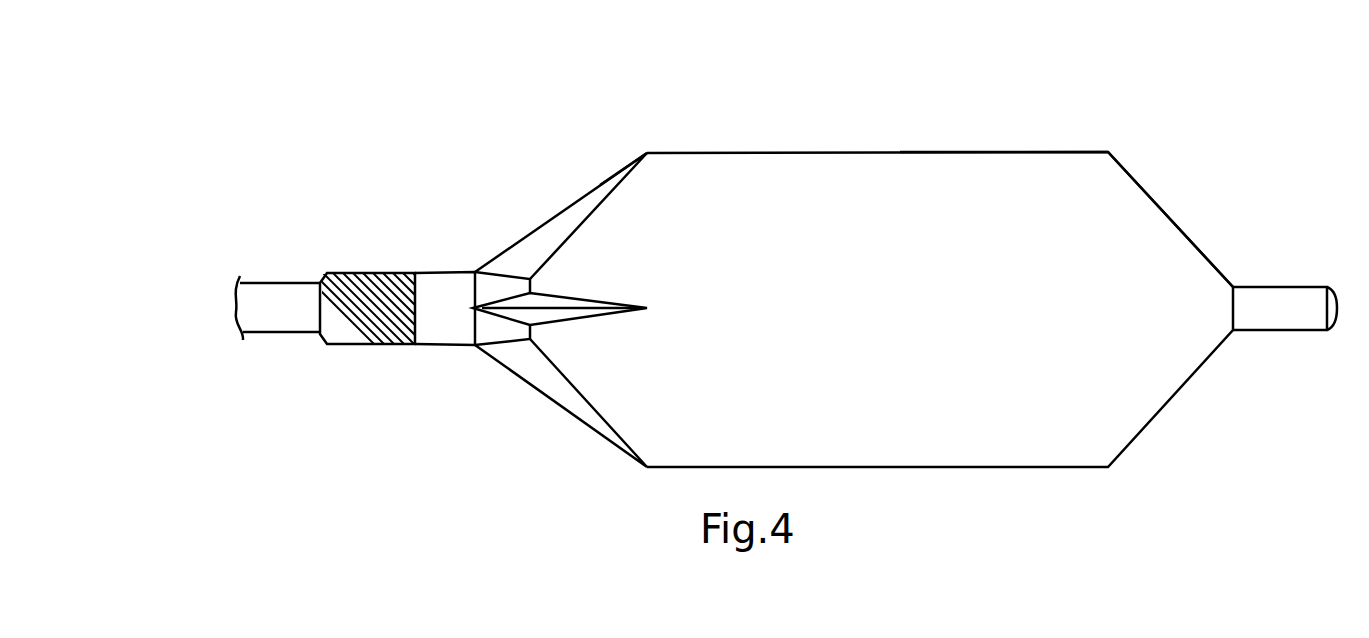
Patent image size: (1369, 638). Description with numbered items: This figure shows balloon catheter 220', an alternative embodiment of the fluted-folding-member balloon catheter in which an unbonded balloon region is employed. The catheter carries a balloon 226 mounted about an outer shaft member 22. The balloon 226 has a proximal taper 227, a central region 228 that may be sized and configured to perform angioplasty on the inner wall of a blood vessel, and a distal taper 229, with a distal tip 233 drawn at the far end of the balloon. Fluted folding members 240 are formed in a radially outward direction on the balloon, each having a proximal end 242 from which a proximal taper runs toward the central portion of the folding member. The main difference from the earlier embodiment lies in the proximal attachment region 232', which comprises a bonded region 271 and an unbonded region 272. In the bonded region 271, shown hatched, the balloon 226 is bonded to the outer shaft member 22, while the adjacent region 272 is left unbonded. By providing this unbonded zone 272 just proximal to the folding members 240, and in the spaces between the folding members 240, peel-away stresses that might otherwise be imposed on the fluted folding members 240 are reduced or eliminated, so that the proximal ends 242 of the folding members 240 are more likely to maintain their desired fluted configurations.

The balloon catheter 220' is at (743, 276).
The outer shaft member 22 is at (295, 317).
The bonded region 271 is at (363, 330).
The proximal attachment region 232' is at (367, 263).
The unbonded region 272 is at (453, 325).
The proximal end 242 is at (474, 270).
The folding member 240 is at (571, 204).
The proximal taper 227 is at (622, 185).
The balloon 226 is at (958, 220).
The central region 228 is at (1062, 152).
The distal taper 229 is at (1180, 227).
The distal tip 233 is at (1282, 295).